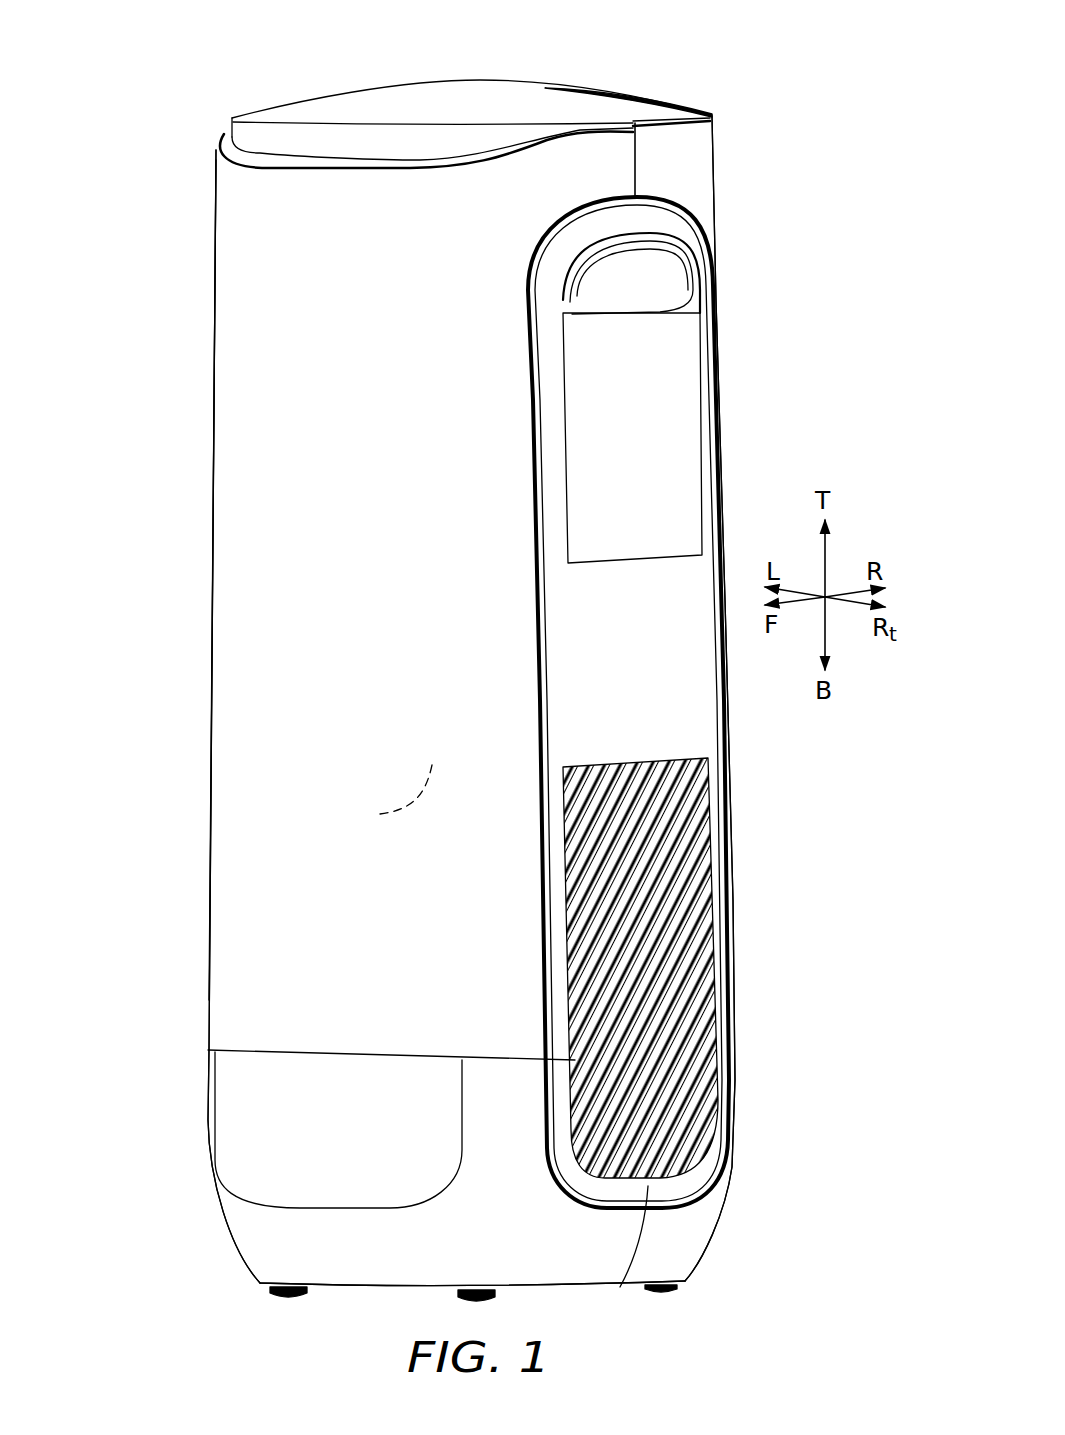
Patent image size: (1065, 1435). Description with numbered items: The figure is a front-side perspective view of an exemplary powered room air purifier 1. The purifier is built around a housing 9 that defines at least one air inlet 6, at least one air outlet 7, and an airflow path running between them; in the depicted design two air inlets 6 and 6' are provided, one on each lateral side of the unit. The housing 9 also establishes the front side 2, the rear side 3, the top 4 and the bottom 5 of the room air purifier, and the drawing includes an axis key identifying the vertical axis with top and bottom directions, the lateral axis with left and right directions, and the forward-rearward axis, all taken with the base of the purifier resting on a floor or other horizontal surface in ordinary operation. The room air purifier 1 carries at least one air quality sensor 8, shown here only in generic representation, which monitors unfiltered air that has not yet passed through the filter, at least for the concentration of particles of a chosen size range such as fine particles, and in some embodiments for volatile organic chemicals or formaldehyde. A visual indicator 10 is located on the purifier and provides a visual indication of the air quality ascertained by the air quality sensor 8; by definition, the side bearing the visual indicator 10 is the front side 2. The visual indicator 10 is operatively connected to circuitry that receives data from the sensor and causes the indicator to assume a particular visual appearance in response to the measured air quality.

The room air purifier 1 is at (137, 40).
The front side 2 is at (165, 535).
The rear side 3 is at (735, 218).
The top 4 is at (295, 72).
The bottom 5 is at (318, 1328).
The air inlet 6 is at (657, 970).
The air inlet 6' is at (342, 1074).
The air outlet 7 is at (656, 68).
The air quality sensor 8 is at (380, 814).
The housing 9 is at (242, 357).
The visual indicator 10 is at (285, 135).